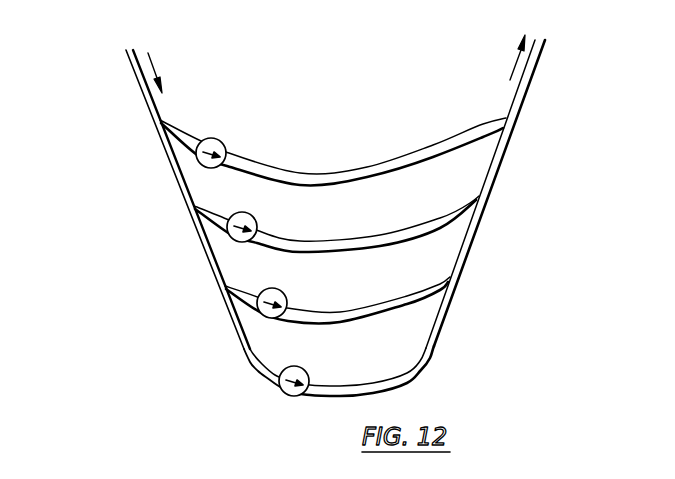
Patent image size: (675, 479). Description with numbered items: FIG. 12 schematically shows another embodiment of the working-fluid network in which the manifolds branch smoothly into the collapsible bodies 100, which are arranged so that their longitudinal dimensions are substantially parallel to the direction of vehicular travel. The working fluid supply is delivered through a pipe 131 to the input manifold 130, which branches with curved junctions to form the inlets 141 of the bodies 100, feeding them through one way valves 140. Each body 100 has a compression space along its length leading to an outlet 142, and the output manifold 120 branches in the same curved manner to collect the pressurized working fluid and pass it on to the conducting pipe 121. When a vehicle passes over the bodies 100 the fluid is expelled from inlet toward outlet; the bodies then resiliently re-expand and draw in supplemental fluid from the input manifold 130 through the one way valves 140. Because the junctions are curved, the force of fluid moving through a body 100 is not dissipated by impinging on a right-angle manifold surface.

The collapsible bodies 100 is at (347, 172).
The output manifold 120 is at (491, 195).
The conducting pipe 121 is at (527, 91).
The input manifold 130 is at (191, 218).
The pipe 131 is at (140, 89).
The one way valves 140 is at (244, 212).
The inlets 141 is at (297, 184).
The outlets 142 is at (450, 334).